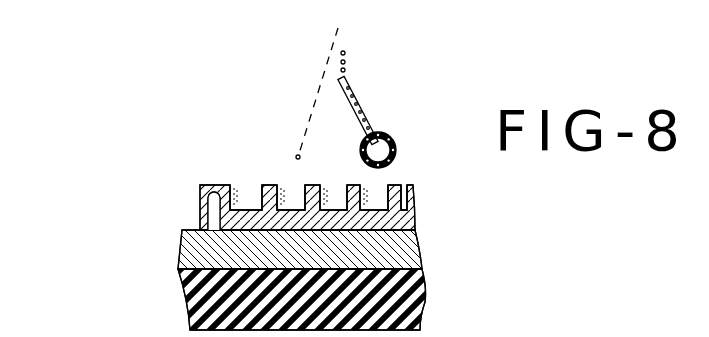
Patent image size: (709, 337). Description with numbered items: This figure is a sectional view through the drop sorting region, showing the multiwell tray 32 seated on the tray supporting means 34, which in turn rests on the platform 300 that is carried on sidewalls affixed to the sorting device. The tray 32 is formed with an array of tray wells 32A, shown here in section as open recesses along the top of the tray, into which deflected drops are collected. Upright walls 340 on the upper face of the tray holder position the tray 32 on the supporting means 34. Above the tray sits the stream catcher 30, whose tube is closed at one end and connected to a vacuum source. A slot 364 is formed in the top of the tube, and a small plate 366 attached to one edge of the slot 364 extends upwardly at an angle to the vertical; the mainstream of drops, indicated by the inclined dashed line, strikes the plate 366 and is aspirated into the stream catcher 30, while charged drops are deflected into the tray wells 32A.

The stream catcher 30 is at (398, 155).
The multiwell tray 32 is at (200, 186).
The tray wells 32A is at (280, 152).
The tray supporting means 34 is at (182, 252).
The platform 300 is at (181, 303).
The upright walls 340 is at (199, 213).
The slot 364 is at (384, 130).
The plate 366 is at (347, 106).